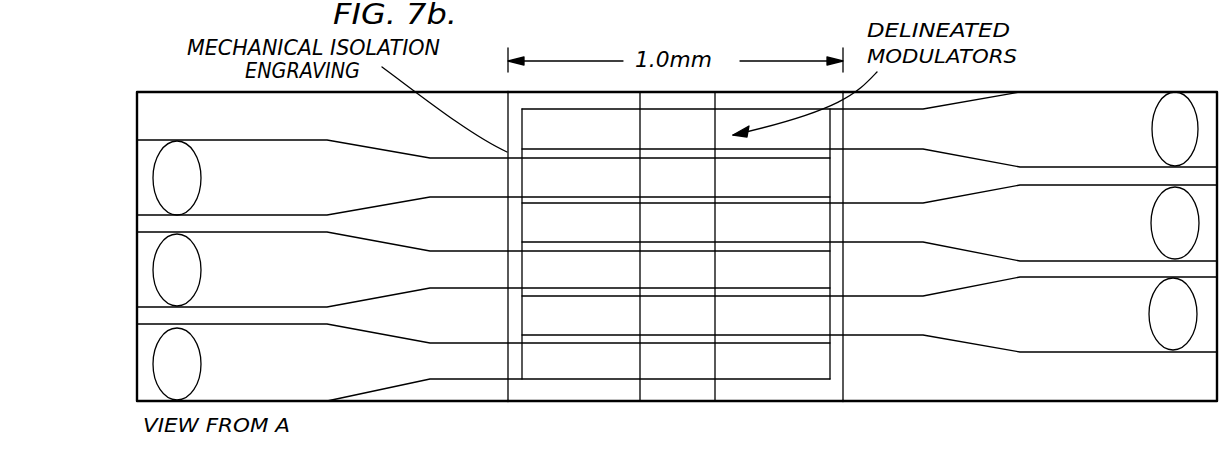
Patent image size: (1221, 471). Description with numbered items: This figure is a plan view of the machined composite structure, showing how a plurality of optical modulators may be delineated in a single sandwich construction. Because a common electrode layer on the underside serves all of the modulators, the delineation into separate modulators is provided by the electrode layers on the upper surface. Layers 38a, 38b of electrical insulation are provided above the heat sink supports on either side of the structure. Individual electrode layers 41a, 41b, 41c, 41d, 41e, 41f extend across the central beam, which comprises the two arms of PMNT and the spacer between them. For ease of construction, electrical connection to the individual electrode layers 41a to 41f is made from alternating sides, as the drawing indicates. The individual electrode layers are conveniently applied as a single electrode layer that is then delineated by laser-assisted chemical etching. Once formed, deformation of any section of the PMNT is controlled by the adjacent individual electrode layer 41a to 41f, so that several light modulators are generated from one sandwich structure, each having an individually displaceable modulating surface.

The layer of electrical insulation 38a is at (410, 328).
The layer of electrical insulation 38b is at (955, 278).
The individual electrode layer 41a is at (535, 118).
The individual electrode layer 41b is at (813, 178).
The individual electrode layer 41c is at (540, 219).
The individual electrode layer 41d is at (810, 268).
The individual electrode layer 41e is at (530, 316).
The individual electrode layer 41f is at (807, 366).